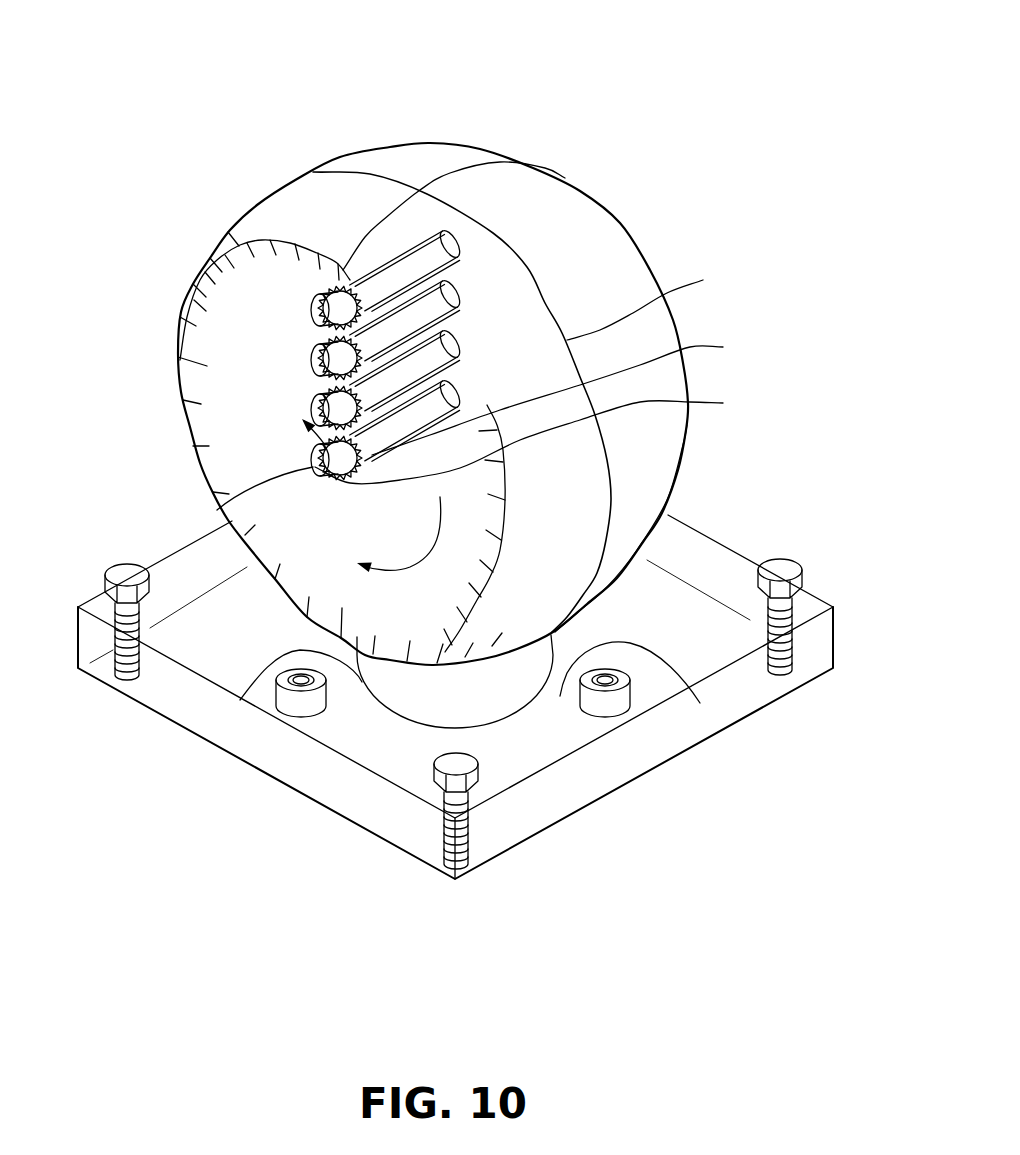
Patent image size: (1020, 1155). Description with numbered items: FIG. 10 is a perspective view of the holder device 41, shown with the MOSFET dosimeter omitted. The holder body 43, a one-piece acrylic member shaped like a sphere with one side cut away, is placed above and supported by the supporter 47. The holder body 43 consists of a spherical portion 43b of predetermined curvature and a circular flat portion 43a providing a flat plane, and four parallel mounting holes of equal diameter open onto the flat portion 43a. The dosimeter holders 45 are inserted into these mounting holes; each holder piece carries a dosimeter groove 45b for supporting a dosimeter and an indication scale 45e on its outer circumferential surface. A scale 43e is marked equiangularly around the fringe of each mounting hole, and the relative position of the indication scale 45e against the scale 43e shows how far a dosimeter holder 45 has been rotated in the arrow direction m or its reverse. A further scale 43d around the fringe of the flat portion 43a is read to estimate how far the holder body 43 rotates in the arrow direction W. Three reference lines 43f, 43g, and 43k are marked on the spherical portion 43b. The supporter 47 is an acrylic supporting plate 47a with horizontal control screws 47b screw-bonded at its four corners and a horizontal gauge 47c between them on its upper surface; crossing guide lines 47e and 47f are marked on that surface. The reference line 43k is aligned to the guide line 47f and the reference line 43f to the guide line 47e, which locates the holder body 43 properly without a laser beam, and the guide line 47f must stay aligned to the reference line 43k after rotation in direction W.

The holder device 41 is at (752, 195).
The holder body 43 is at (531, 148).
The flat portion 43a is at (243, 430).
The spherical portion 43b is at (480, 300).
The scale 43d is at (178, 358).
The scale 43e is at (723, 347).
The reference line 43f is at (388, 215).
The reference line 43g is at (660, 470).
The reference line 43k is at (703, 280).
The dosimeter holder 45 is at (322, 282).
The dosimeter groove 45b is at (217, 510).
The indication scale 45e is at (723, 403).
The supporter 47 is at (245, 797).
The supporting plate 47a is at (393, 753).
The horizontal control screws 47b is at (120, 567).
The horizontal gauge 47c is at (610, 707).
The guide line 47e is at (240, 700).
The guide line 47f is at (700, 703).
The arrow direction m is at (299, 426).
The arrow direction W is at (401, 539).